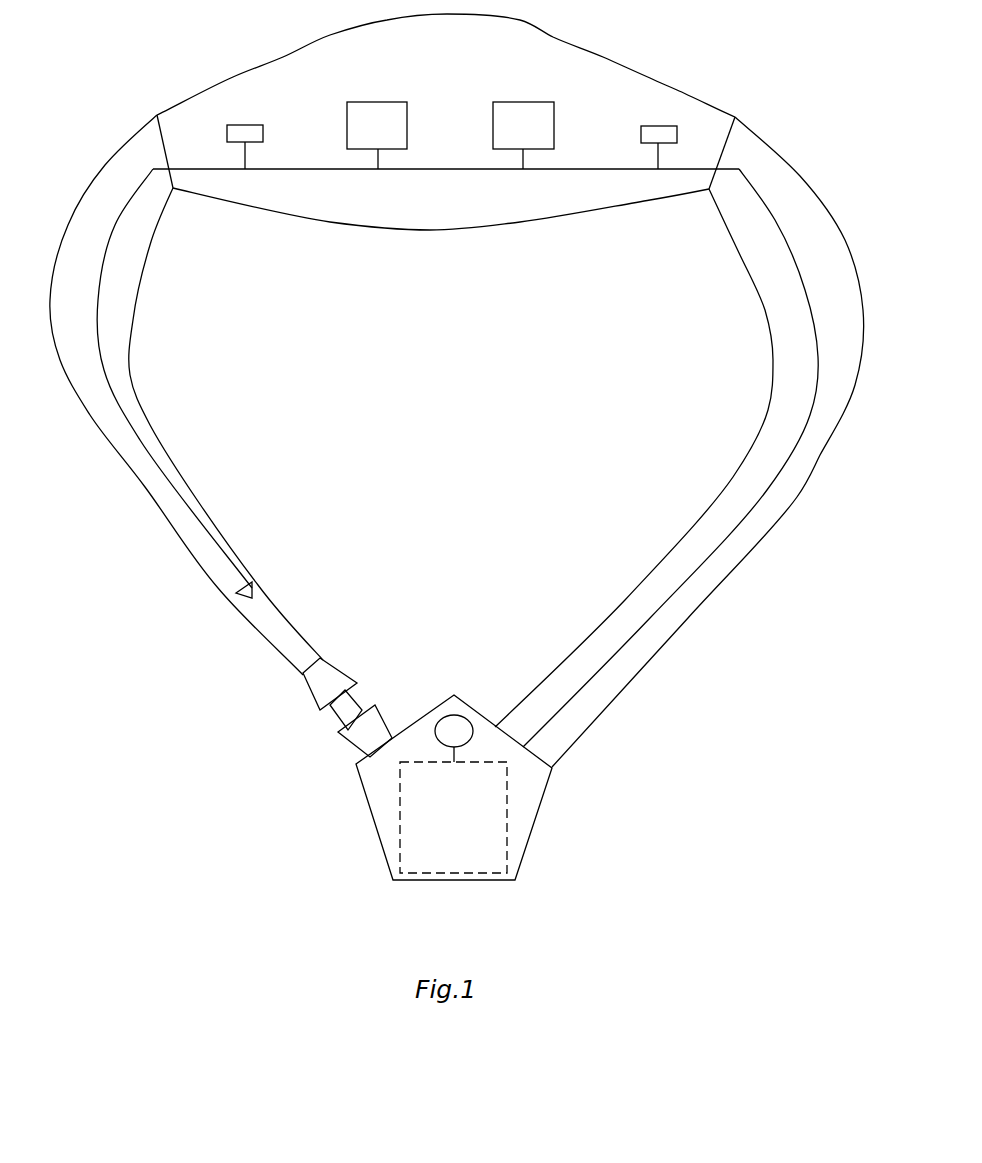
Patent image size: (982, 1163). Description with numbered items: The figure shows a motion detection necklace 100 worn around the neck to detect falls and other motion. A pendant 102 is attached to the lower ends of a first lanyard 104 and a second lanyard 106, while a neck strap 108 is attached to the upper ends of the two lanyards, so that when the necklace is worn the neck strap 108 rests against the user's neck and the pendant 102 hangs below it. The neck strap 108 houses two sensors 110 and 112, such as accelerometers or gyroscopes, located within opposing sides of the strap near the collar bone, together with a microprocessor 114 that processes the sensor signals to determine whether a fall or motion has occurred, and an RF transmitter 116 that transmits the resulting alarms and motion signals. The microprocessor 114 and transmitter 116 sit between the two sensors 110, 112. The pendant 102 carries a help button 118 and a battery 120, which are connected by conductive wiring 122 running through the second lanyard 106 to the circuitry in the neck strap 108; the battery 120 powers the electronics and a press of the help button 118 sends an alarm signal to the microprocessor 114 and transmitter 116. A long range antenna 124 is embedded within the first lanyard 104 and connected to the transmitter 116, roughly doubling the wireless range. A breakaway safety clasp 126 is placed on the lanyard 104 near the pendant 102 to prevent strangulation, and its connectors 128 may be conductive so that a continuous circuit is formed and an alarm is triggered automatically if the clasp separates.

The motion detection necklace 100 is at (121, 32).
The pendant 102 is at (532, 824).
The first lanyard 104 is at (166, 452).
The second lanyard 106 is at (647, 580).
The neck strap 108 is at (445, 231).
The sensor 110 is at (253, 125).
The sensor 112 is at (641, 133).
The microprocessor 114 is at (378, 102).
The RF transmitter 116 is at (523, 102).
The help button 118 is at (452, 715).
The battery 120 is at (400, 795).
The conductive wiring 122 is at (766, 203).
The long range antenna 124 is at (138, 193).
The breakaway safety clasp 126 is at (352, 657).
The connectors 128 is at (338, 716).